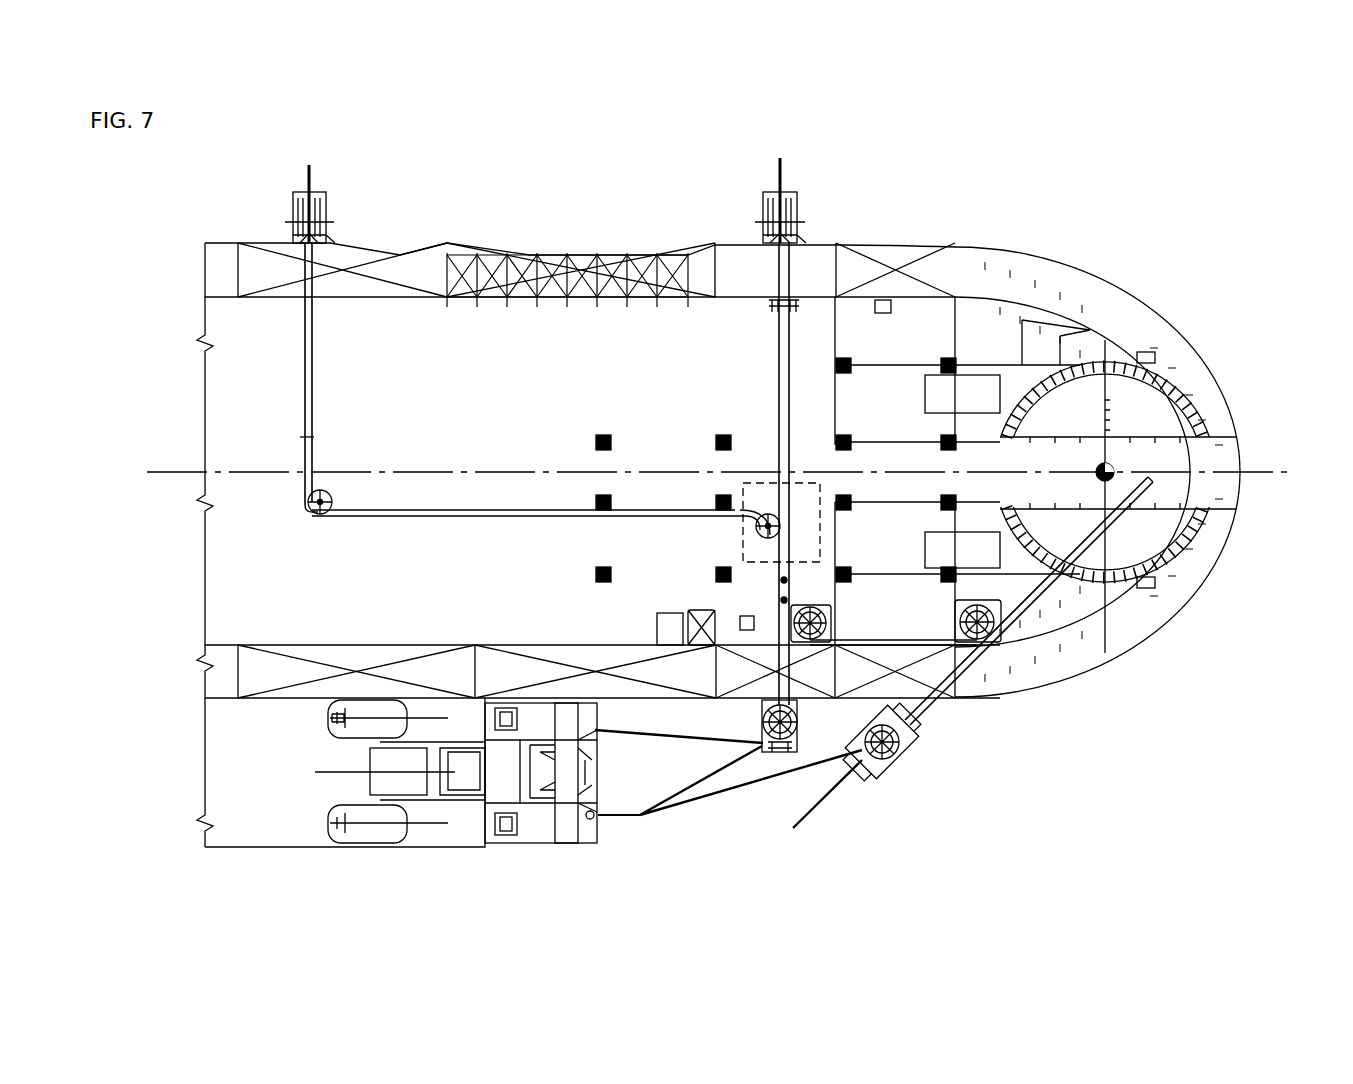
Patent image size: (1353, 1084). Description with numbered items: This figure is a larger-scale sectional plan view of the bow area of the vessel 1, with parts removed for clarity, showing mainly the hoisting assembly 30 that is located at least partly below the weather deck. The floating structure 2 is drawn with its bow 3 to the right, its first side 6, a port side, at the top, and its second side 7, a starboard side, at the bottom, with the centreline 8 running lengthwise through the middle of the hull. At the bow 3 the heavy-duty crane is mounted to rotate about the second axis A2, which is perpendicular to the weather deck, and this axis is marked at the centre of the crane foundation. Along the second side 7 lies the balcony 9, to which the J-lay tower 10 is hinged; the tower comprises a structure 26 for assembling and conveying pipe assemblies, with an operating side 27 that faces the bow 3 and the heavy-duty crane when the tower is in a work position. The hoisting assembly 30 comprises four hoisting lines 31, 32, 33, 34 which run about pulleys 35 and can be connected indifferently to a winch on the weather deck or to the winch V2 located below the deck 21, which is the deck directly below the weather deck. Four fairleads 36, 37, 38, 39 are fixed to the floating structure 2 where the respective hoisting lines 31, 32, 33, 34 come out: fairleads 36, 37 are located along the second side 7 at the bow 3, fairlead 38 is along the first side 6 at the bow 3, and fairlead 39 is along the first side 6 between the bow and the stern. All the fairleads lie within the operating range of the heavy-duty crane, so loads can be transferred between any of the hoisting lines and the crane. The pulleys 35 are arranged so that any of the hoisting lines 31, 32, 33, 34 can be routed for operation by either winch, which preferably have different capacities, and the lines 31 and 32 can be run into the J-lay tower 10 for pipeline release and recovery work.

The vessel 1 is at (719, 484).
The floating structure 2 is at (1000, 262).
The bow 3 is at (1186, 322).
The first side 6 is at (722, 244).
The second side 7 is at (740, 700).
The centreline 8 is at (1285, 470).
The balcony 9 is at (268, 842).
The J-lay tower 10 is at (494, 802).
The deck 21 is at (242, 600).
The structure 26 is at (565, 840).
The operating side 27 is at (602, 797).
The hoisting assembly 30 is at (612, 353).
The hoisting line 31 is at (655, 742).
The hoisting line 32 is at (822, 812).
The hoisting line 33 is at (782, 180).
The hoisting line 34 is at (313, 188).
The pulleys 35 is at (322, 488).
The fairlead 36 is at (797, 750).
The fairlead 37 is at (900, 762).
The fairlead 38 is at (797, 222).
The fairlead 39 is at (326, 208).
The second axis A2 is at (1100, 466).
The winch V2 is at (810, 492).